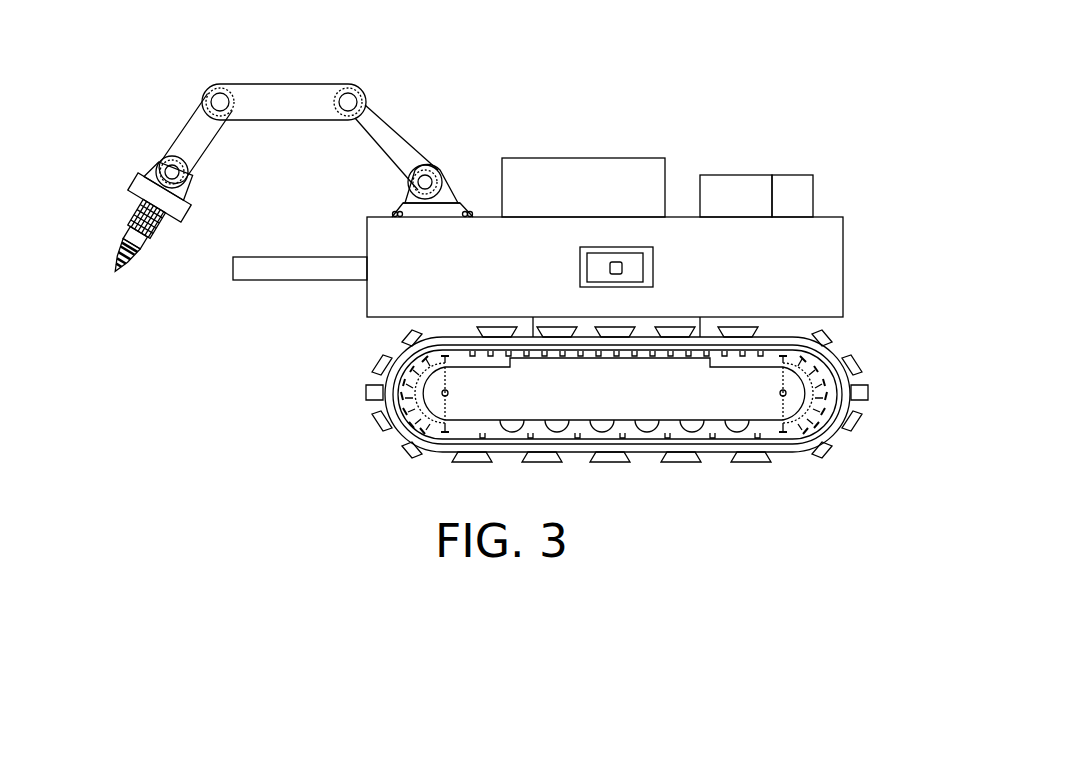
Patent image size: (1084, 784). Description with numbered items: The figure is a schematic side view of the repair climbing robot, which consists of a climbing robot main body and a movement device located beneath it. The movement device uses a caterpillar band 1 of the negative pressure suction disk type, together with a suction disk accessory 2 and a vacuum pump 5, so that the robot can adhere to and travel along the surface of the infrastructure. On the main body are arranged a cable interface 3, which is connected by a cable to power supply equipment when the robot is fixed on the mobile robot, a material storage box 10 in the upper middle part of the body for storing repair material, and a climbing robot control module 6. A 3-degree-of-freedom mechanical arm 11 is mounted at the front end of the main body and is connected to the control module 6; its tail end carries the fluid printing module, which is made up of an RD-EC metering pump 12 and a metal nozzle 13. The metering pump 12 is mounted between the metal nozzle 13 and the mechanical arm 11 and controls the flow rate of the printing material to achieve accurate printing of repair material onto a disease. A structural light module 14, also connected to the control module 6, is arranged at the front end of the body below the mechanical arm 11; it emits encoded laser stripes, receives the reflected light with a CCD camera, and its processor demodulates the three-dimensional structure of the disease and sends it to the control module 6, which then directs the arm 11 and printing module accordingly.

The caterpillar band 1 is at (392, 422).
The suction disk accessory 2 is at (380, 377).
The cable interface 3 is at (653, 267).
The vacuum pump 5 is at (813, 175).
The climbing robot control module 6 is at (742, 175).
The material storage box 10 is at (588, 157).
The 3-degree-of-freedom mechanical arm 11 is at (298, 84).
The RD-EC metering pump 12 is at (132, 213).
The metal nozzle 13 is at (118, 253).
The structural light module 14 is at (287, 280).